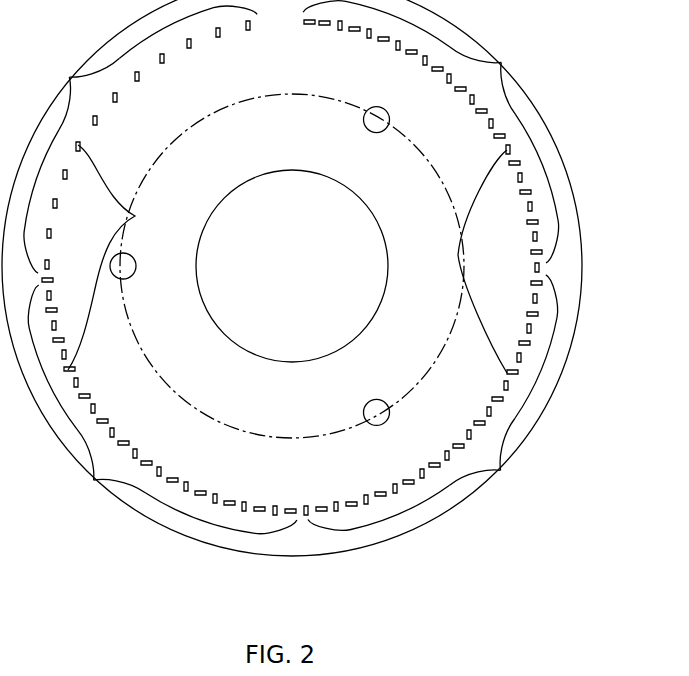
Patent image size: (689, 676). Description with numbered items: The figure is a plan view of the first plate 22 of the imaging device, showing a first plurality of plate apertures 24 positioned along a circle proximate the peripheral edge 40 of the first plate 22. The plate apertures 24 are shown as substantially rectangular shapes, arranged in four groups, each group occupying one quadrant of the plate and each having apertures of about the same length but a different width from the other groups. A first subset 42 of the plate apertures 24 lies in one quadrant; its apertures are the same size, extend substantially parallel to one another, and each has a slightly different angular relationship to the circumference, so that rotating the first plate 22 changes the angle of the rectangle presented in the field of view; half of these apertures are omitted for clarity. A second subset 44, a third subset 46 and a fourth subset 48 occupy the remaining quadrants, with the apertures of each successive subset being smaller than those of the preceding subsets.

The first plate 22 is at (560, 270).
The plate apertures 24 is at (135, 216).
The peripheral edge 40 is at (572, 180).
The first subset 42 is at (69, 77).
The second subset 44 is at (94, 480).
The third subset 46 is at (501, 470).
The fourth subset 48 is at (501, 62).